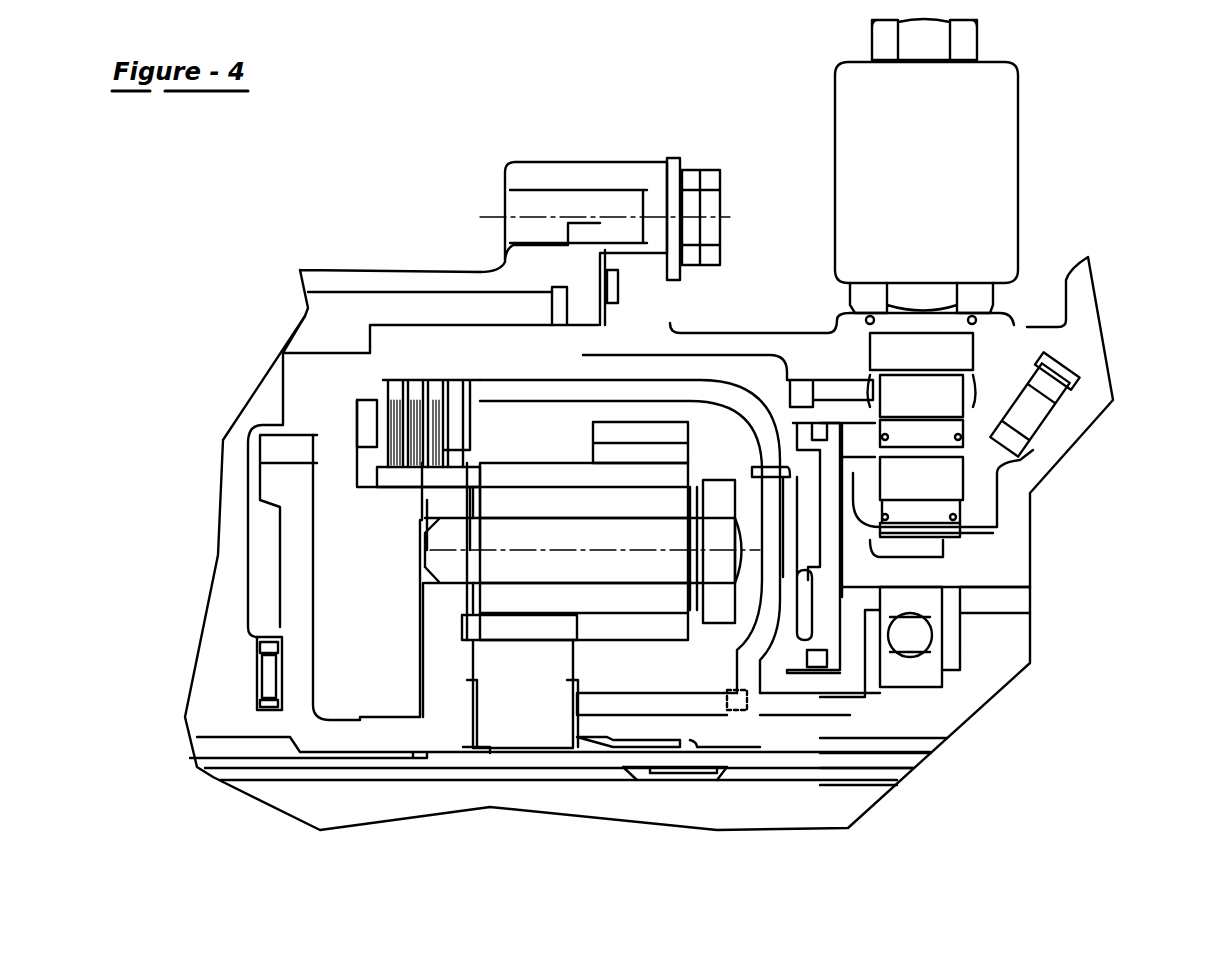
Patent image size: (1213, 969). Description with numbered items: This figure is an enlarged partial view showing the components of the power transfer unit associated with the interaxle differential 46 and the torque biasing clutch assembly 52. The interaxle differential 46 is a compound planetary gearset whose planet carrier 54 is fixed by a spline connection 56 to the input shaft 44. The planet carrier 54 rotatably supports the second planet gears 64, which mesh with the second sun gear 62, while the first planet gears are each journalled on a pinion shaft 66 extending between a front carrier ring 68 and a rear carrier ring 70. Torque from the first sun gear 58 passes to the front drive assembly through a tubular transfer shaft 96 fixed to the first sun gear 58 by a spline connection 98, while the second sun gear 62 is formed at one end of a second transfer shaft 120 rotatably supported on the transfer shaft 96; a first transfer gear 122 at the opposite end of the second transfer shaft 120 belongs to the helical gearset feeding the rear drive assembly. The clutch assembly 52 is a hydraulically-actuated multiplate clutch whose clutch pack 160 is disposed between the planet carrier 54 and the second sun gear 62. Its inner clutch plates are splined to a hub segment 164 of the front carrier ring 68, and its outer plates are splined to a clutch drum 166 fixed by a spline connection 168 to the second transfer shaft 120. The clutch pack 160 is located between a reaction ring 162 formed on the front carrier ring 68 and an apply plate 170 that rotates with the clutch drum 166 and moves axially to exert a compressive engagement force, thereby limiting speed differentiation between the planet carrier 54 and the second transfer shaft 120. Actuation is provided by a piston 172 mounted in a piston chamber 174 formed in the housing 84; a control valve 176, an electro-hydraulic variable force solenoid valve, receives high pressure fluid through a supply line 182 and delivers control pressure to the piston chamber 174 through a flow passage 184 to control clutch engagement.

The input shaft 44 is at (233, 753).
The interaxle differential 46 is at (540, 463).
The torque biasing clutch assembly 52 is at (385, 405).
The planet carrier 54 is at (413, 688).
The spline connection 56 is at (418, 745).
The first sun gear 58 is at (529, 700).
The second sun gear 62 is at (610, 700).
The second planet gears 64 is at (610, 430).
The pinion shaft 66 is at (621, 563).
The front carrier ring 68 is at (443, 620).
The rear carrier ring 70 is at (720, 490).
The housing 84 is at (475, 277).
The tubular transfer shaft 96 is at (800, 757).
The spline connection 98 is at (523, 752).
The second transfer shaft 120 is at (853, 730).
The first transfer gear 122 is at (993, 640).
The clutch pack 160 is at (370, 417).
The reaction ring 162 is at (380, 447).
The hub segment 164 is at (412, 500).
The clutch drum 166 is at (633, 390).
The spline connection 168 is at (735, 707).
The apply plate 170 is at (463, 393).
The piston 172 is at (830, 515).
The piston chamber 174 is at (853, 573).
The control valve 176 is at (1027, 327).
The supply line 182 is at (1053, 450).
The flow passage 184 is at (920, 527).